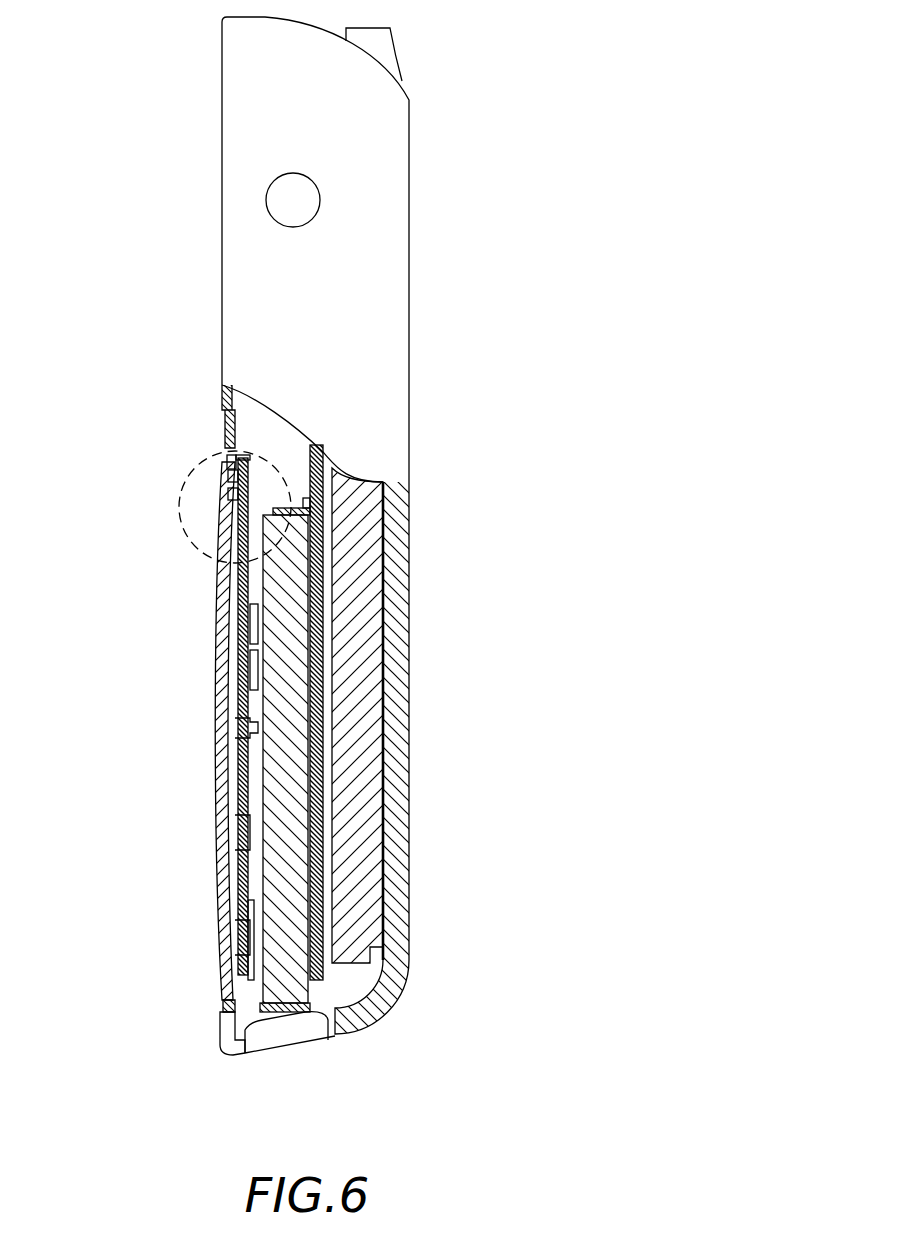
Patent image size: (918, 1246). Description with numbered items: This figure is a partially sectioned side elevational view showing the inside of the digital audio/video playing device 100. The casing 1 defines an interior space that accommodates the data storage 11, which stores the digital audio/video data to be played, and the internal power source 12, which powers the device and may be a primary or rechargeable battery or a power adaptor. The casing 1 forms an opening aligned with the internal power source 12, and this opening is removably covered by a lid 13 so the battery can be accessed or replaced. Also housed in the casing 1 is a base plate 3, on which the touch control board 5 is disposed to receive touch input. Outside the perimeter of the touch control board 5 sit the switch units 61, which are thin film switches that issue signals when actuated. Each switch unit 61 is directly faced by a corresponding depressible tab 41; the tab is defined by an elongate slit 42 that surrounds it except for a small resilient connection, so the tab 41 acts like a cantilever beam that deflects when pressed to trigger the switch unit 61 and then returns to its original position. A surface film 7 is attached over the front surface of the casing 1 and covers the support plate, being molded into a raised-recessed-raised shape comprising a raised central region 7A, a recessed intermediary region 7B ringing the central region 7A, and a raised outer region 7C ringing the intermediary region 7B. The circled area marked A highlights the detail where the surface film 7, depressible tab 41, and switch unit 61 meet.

The digital audio/video playing device 100 is at (490, 212).
The casing 1 is at (397, 550).
The data storage 11 is at (355, 787).
The internal power source 12 is at (297, 995).
The lid 13 is at (282, 1040).
The base plate 3 is at (248, 490).
The depressible tab 41 is at (224, 517).
The elongate slit 42 is at (270, 548).
The touch control board 5 is at (222, 660).
The switch unit 61 is at (227, 467).
The surface film 7 is at (195, 613).
The raised central region 7A is at (222, 727).
The recessed intermediary region 7B is at (227, 832).
The raised outer region 7C is at (222, 937).
The detail region A is at (177, 495).